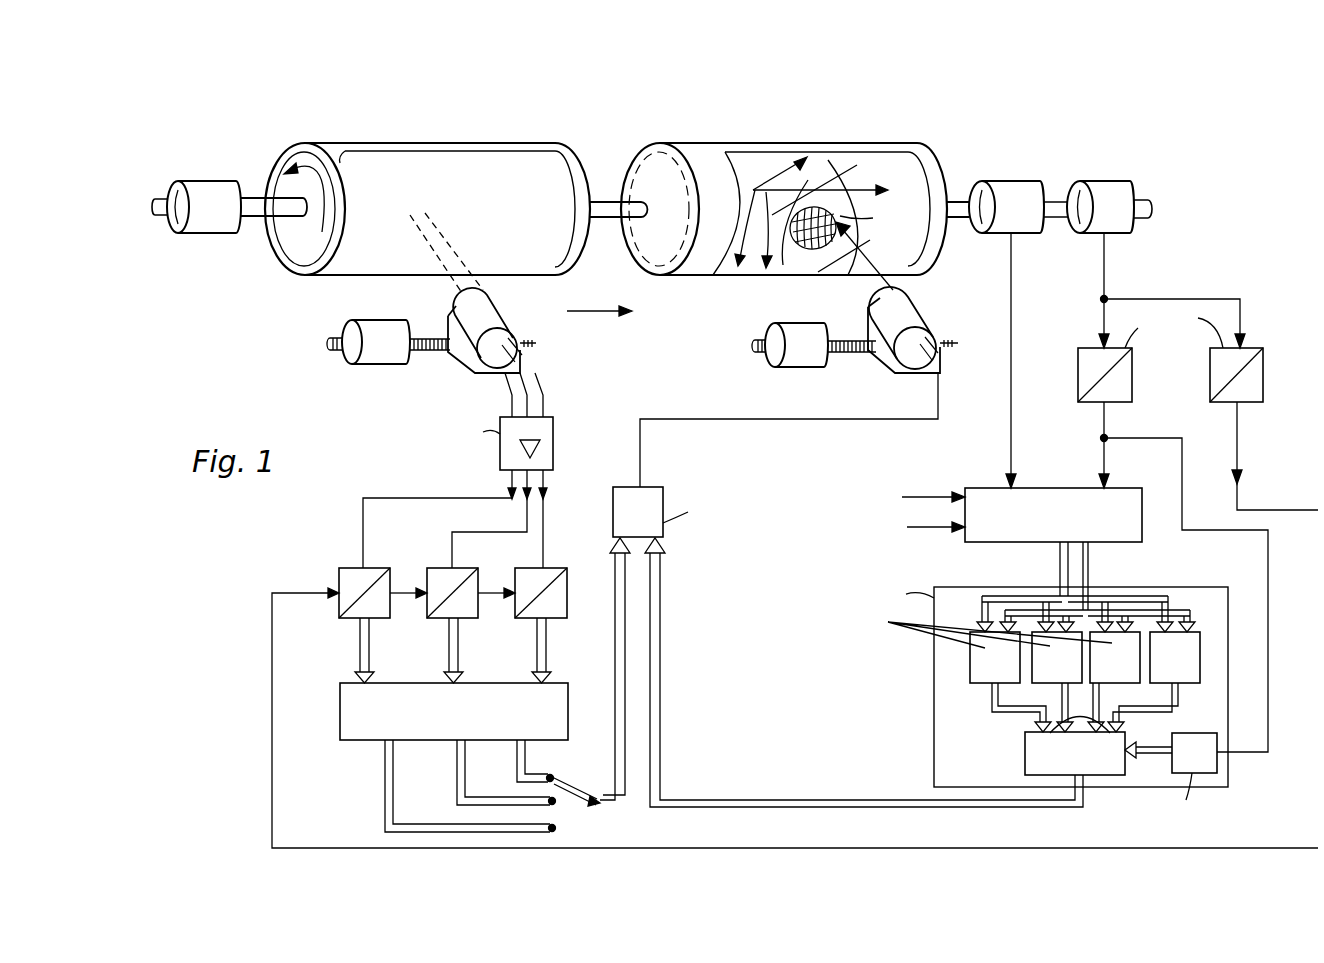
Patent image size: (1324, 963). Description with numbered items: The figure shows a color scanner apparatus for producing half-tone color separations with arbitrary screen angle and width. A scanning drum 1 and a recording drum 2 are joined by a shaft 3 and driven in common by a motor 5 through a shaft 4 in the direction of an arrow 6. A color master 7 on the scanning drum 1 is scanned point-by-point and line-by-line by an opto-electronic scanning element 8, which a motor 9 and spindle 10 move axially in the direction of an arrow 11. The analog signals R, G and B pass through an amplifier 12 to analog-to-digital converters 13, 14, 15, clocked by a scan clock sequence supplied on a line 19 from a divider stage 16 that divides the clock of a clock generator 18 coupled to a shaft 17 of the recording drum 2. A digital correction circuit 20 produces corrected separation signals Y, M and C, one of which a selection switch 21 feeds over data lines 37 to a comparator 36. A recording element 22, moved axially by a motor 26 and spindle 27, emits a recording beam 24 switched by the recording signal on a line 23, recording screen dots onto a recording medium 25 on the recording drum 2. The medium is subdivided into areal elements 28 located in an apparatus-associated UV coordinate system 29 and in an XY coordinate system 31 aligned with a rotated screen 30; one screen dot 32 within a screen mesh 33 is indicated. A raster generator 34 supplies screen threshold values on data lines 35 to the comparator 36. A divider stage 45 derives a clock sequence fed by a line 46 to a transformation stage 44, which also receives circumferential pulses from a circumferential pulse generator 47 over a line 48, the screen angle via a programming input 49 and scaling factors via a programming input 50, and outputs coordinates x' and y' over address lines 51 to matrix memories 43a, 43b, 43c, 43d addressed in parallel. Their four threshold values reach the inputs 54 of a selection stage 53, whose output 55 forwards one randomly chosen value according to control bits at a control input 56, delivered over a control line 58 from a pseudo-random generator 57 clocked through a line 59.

The scanning drum 1 is at (582, 168).
The recording drum 2 is at (690, 262).
The shaft 3 is at (604, 214).
The shaft 4 is at (266, 203).
The motor 5 is at (230, 216).
The arrow 6 is at (292, 165).
The color master 7 is at (513, 257).
The opto-electronic scanning element 8 is at (468, 314).
The motor 9 is at (385, 362).
The spindle 10 is at (436, 352).
The arrow 11 is at (596, 314).
The amplifier 12 is at (553, 430).
The analog-to-digital converter 13 is at (342, 612).
The analog-to-digital converter 14 is at (443, 618).
The analog-to-digital converter 15 is at (530, 613).
The divider stage 16 is at (1212, 378).
The shaft 17 is at (960, 198).
The clock generator 18 is at (1106, 195).
The line 19 is at (1240, 465).
The digital correction circuit 20 is at (340, 705).
The selection switch 21 is at (572, 787).
The recording element 22 is at (922, 309).
The line 23 is at (742, 421).
The recording beam 24 is at (866, 270).
The recording medium 25 is at (834, 160).
The motor 26 is at (800, 368).
The spindle 27 is at (850, 354).
The areal elements 28 is at (803, 250).
The UV coordinate system 29 is at (862, 190).
The rotated screen 30 is at (856, 204).
The XY coordinate system 31 is at (780, 178).
The screen dot 32 is at (821, 251).
The screen mesh 33 is at (800, 186).
The raster generator 34 is at (935, 645).
The data lines 35 is at (762, 795).
The comparator 36 is at (622, 503).
The data lines 37 is at (622, 664).
The matrix memory 43a is at (973, 665).
The matrix memory 43b is at (1052, 675).
The matrix memory 43c is at (1125, 675).
The matrix memory 43d is at (1193, 674).
The transformation stage 44 is at (1072, 490).
The divider stage 45 is at (1132, 388).
The line 46 is at (1108, 450).
The circumferential pulse generator 47 is at (1010, 195).
The line 48 is at (1013, 415).
The programming input 49 is at (947, 493).
The programming input 50 is at (947, 536).
The address lines 51 is at (1062, 576).
The selection stage 53 is at (1025, 756).
The inputs 54 is at (1080, 711).
The output 55 is at (1088, 790).
The control input 56 is at (1135, 744).
The pseudo-random generator 57 is at (1192, 733).
The control line 58 is at (1148, 754).
The line 59 is at (1268, 668).